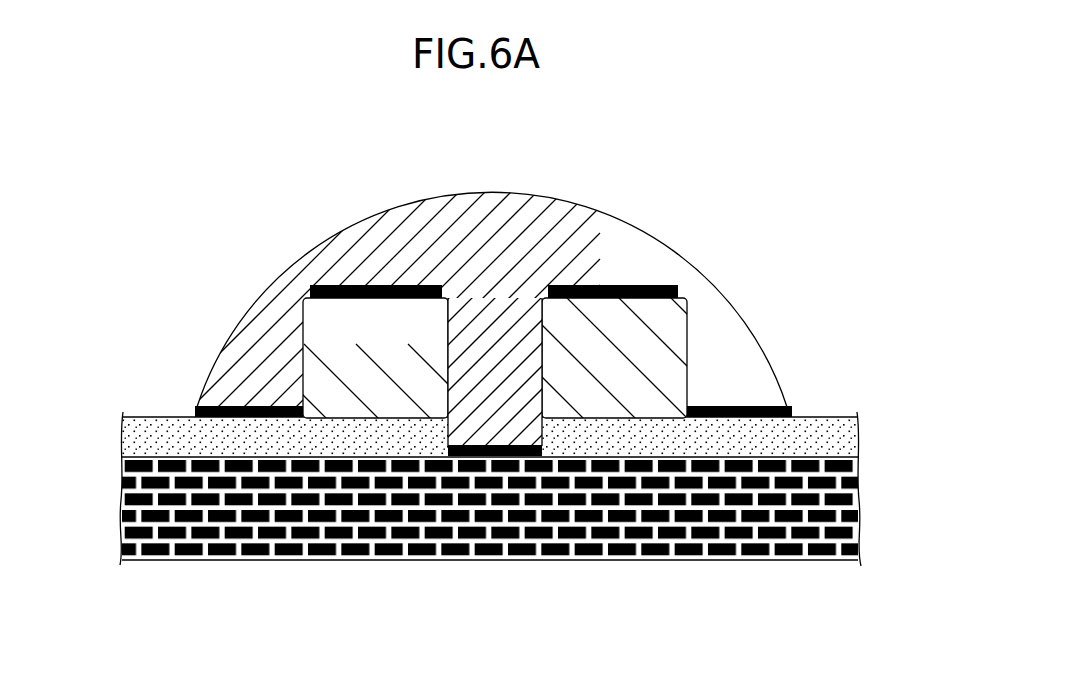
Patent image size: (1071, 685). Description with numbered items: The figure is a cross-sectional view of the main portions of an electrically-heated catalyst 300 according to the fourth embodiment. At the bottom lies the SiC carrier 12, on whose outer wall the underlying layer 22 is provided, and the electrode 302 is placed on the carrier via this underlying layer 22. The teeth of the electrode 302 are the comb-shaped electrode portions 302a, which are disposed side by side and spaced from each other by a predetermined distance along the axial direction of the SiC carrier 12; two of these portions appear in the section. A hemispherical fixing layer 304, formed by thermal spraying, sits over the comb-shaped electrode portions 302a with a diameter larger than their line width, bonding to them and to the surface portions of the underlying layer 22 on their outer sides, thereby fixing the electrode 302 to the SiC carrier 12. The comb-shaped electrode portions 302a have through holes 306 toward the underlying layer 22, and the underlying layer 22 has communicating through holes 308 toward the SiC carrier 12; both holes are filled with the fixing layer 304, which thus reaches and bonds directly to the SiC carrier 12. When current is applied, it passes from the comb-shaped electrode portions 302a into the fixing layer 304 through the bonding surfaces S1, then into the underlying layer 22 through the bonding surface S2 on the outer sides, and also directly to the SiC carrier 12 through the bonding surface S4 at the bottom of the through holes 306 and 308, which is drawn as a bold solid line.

The electrically-heated catalyst 300 is at (454, 342).
The electrode 302 is at (476, 439).
The comb-shaped electrode portions 302a is at (318, 326).
The fixing layers 304 is at (586, 222).
The through holes 306 is at (462, 333).
The through holes 308 is at (450, 431).
The SiC carrier 12 is at (800, 560).
The underlying layer 22 is at (855, 441).
The bonding surfaces S1 is at (333, 283).
The bonding surface S2 is at (196, 408).
The bonding surface S4 is at (521, 452).